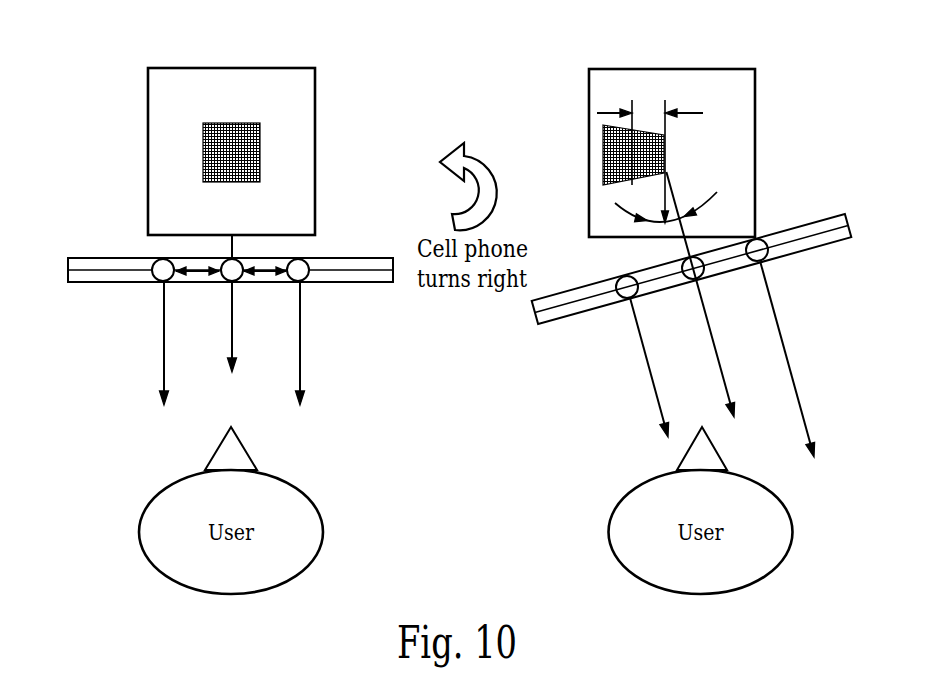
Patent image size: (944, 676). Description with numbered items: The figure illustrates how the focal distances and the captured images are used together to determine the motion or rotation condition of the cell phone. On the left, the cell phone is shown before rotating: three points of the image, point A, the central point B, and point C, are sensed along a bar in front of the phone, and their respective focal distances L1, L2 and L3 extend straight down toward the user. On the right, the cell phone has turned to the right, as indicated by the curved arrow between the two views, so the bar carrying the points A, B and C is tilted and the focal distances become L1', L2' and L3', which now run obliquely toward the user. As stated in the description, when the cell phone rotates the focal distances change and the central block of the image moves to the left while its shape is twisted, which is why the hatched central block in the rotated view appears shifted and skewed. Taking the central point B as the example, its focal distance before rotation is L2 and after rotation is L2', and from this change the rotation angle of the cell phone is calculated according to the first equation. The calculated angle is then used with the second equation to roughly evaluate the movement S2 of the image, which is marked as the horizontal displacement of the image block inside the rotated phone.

The point A of the image A is at (395, 278).
The central point B of the image B is at (462, 269).
The point C of the image C is at (527, 260).
The focal distance of point A L1 is at (148, 343).
The focal distance of point B L2 is at (214, 327).
The focal distance of point C L3 is at (282, 343).
The focal distance of point A after rotation L1' is at (653, 368).
The focal distance of point B after rotation L2' is at (705, 294).
The focal distance of point C after rotation L3' is at (787, 359).
The movement of the image S2 is at (650, 150).